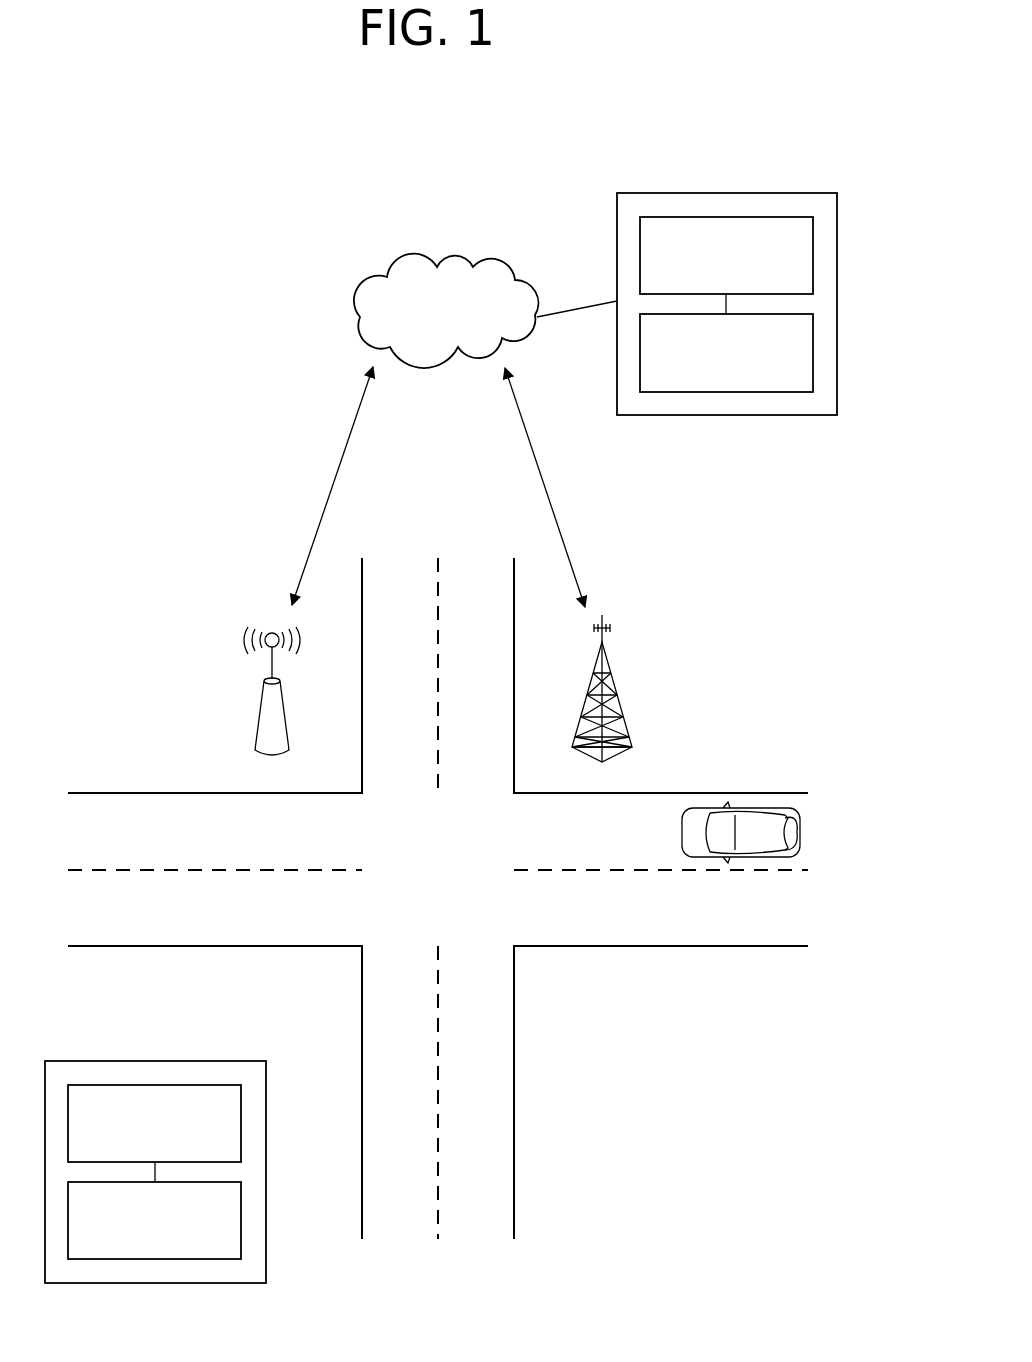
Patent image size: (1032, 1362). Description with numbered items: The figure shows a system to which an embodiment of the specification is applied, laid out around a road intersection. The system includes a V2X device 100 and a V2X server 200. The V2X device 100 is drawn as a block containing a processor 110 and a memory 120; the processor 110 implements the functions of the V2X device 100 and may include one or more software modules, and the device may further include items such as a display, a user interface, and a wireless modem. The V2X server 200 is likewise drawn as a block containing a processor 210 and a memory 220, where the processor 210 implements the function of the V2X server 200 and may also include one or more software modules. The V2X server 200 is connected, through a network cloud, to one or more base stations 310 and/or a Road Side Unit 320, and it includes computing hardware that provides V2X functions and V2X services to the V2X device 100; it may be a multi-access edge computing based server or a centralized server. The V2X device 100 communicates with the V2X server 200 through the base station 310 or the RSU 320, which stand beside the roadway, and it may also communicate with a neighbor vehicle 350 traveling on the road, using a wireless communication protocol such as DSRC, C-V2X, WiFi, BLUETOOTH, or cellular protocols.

The V2X device 100 is at (155, 1061).
The processor 110 is at (241, 1122).
The memory 120 is at (241, 1220).
The V2X server 200 is at (726, 193).
The processor 210 is at (813, 254).
The memory 220 is at (813, 352).
The base station 310 is at (619, 693).
The Road Side Unit 320 is at (258, 705).
The neighbor vehicle 350 is at (739, 808).